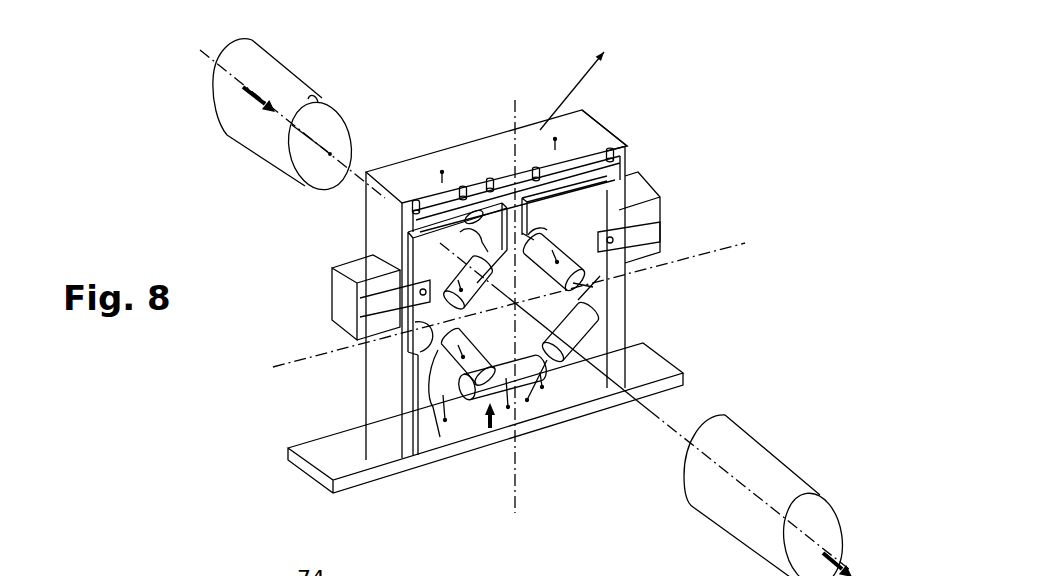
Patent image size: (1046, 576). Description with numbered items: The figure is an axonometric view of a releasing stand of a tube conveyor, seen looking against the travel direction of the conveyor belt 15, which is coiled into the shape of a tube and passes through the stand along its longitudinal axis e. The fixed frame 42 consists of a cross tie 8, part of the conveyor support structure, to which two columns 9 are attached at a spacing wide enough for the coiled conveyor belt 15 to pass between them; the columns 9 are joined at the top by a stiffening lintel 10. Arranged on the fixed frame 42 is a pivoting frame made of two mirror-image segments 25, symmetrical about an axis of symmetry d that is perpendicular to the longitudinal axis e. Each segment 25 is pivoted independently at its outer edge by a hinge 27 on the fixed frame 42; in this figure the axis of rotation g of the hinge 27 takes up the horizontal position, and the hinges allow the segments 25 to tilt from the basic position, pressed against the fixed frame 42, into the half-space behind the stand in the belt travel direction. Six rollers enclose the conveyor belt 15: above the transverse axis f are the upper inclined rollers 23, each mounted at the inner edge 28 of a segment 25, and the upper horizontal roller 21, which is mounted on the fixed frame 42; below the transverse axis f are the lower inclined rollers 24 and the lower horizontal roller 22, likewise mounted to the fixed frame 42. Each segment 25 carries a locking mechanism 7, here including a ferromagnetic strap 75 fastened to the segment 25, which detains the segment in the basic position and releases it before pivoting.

The locking mechanism 7 is at (322, 309).
The cross tie 8 is at (325, 462).
The columns 9 is at (373, 392).
The stiffening lintel 10 is at (424, 251).
The conveyor belt 15 is at (279, 96).
The upper horizontal roller 21 is at (586, 79).
The lower horizontal roller 22 is at (543, 403).
The upper inclined rollers 23 is at (330, 333).
The lower inclined rollers 24 is at (463, 447).
The segments 25 is at (430, 258).
The hinge 27 is at (460, 193).
The inner edge 28 is at (600, 270).
The fixed frame 42 is at (638, 128).
The strap 75 is at (643, 230).
The axis of symmetry d is at (518, 143).
The longitudinal axis e is at (254, 100).
The transverse axis f is at (709, 255).
The axis of rotation g is at (478, 190).